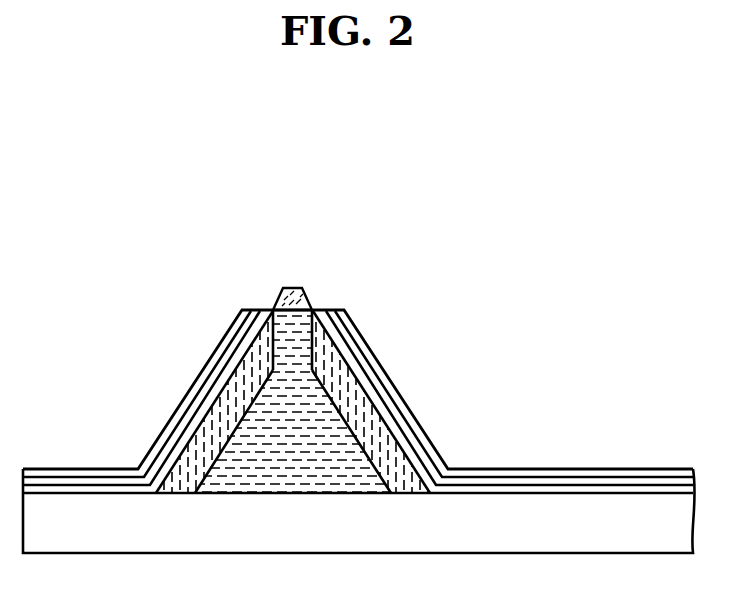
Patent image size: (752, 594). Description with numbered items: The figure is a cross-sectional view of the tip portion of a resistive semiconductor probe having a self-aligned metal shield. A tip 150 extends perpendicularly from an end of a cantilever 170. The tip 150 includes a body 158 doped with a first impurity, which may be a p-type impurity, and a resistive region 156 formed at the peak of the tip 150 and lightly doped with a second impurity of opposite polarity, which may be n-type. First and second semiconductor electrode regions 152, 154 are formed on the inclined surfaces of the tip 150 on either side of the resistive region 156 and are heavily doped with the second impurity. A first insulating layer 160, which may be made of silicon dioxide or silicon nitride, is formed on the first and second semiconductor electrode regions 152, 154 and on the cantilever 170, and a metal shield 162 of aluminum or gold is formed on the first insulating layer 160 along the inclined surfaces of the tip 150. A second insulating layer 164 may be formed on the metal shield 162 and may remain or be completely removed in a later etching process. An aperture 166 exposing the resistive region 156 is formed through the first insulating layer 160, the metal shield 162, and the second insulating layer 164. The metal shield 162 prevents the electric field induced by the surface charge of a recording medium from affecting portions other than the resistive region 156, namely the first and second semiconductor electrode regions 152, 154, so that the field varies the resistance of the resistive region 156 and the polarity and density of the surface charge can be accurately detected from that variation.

The tip 150 is at (358, 358).
The first semiconductor electrode region 152 is at (242, 357).
The second semiconductor electrode region 154 is at (350, 323).
The resistive region 156 is at (292, 288).
The body 158 is at (266, 459).
The first insulating layer 160 is at (373, 387).
The metal shield 162 is at (412, 435).
The second insulating layer 164 is at (452, 468).
The aperture 166 is at (308, 302).
The cantilever 170 is at (595, 507).